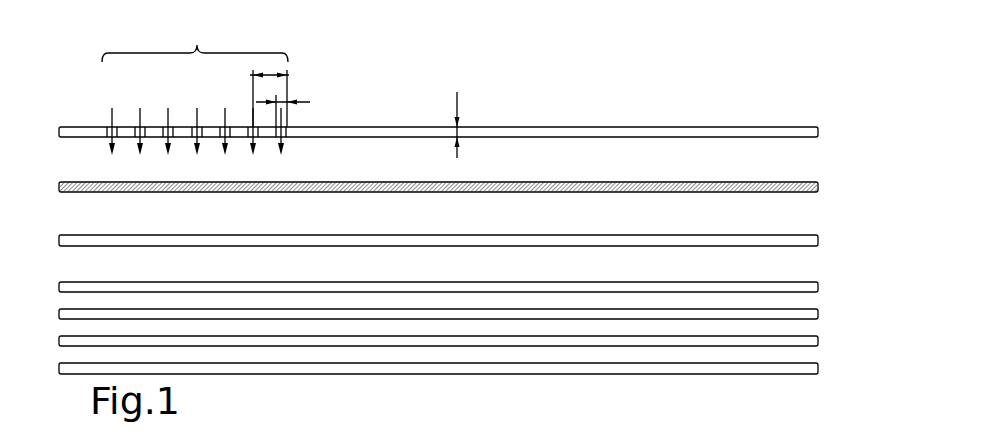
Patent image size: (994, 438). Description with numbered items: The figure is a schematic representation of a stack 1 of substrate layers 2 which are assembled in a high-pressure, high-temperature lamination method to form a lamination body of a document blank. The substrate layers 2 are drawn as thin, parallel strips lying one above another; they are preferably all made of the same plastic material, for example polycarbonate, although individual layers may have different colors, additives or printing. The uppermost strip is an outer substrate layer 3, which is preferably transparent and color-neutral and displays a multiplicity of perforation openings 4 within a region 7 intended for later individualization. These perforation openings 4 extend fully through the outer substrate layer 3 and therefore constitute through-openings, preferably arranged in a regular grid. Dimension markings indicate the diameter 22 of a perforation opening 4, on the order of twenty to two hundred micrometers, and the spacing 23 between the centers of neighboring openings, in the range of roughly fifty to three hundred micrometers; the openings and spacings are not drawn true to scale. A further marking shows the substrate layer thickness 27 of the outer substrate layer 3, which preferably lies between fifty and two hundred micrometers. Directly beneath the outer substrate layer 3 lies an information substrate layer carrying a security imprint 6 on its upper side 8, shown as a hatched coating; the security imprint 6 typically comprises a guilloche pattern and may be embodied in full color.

The stack 1 is at (836, 97).
The substrate layer 2 is at (818, 132).
The outer substrate layer 3 is at (78, 132).
The perforation opening 4 is at (108, 128).
The security imprint 6 is at (365, 182).
The region intended for later individualization 7 is at (195, 38).
The upper side 8 is at (636, 175).
The diameter 22 is at (286, 100).
The spacing 23 is at (268, 74).
The substrate layer thickness 27 is at (460, 128).